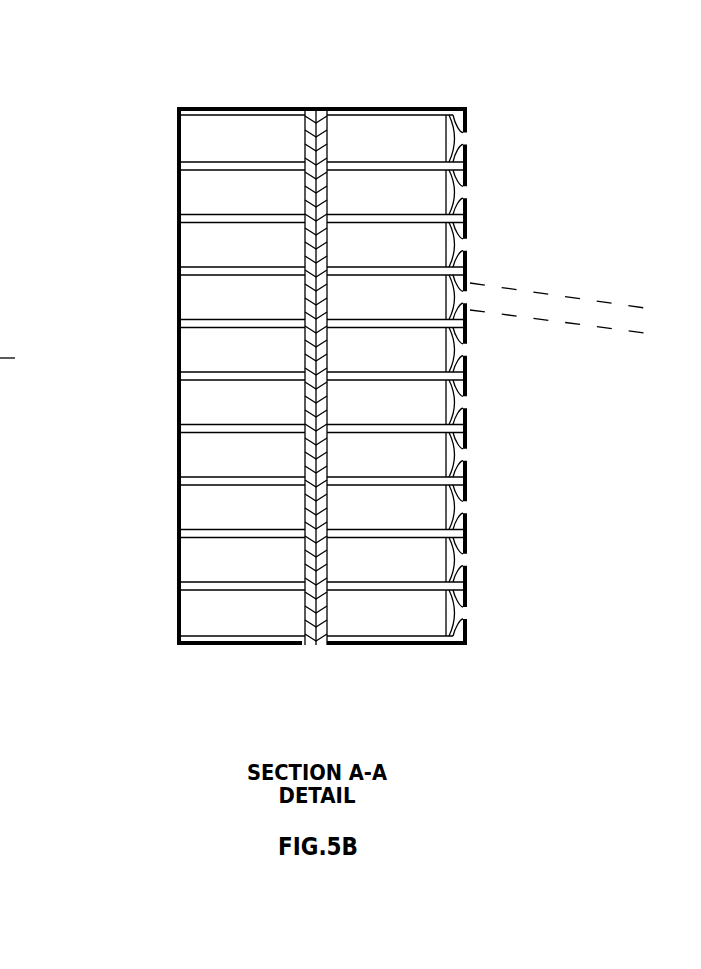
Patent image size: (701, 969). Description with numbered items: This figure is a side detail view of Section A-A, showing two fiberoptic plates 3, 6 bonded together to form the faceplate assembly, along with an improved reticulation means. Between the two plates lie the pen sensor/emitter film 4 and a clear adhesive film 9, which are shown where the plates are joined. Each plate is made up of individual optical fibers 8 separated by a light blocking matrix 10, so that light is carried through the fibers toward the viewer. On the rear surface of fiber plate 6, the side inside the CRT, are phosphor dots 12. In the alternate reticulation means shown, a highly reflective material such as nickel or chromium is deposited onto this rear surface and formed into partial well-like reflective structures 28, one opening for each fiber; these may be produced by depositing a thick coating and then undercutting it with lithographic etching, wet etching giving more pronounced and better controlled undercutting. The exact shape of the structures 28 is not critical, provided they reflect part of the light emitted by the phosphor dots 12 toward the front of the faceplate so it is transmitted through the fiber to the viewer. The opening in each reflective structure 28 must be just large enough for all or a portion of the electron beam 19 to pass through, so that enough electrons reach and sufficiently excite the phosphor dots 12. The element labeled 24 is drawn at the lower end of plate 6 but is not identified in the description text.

The fiberoptic plate 3 is at (183, 102).
The fiberoptic plate 6 is at (445, 102).
The optical fibers 8 is at (228, 140).
The light blocking matrix 10 is at (243, 272).
The pen sensor/emitter film 4 is at (310, 637).
The clear adhesive film 9 is at (318, 637).
The phosphor dots 12 is at (447, 455).
The electron beam 19 is at (560, 303).
The end wall 24 is at (418, 627).
The reflective structures 28 is at (460, 630).